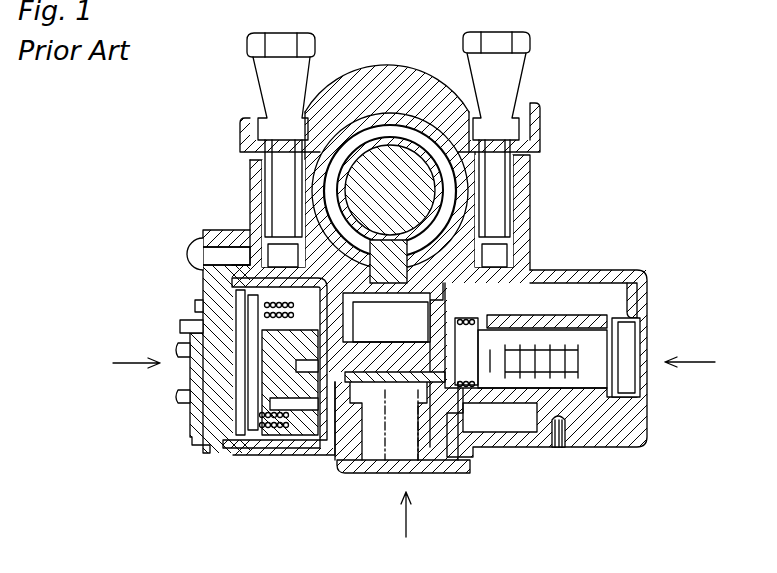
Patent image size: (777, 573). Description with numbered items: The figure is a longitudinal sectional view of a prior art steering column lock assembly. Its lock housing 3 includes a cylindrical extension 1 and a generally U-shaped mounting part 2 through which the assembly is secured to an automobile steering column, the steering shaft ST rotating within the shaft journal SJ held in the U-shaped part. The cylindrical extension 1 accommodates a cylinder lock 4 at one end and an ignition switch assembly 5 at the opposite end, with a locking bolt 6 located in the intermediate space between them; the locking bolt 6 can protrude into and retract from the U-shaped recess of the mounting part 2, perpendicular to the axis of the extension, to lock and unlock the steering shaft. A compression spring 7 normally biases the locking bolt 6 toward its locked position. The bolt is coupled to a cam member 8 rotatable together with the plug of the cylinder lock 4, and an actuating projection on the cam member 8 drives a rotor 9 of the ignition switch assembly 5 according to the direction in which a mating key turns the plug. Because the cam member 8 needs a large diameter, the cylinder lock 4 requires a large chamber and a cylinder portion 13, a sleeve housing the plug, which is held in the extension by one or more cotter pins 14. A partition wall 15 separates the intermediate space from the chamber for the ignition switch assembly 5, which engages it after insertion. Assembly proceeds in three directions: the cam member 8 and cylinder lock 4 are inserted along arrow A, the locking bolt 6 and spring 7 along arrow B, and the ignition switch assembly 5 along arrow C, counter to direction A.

The cylindrical extension 1 is at (504, 448).
The U-shaped mounting part 2 is at (302, 157).
The lock housing 3 is at (538, 238).
The cylinder lock 4 is at (573, 378).
The ignition switch assembly 5 is at (307, 425).
The locking bolt 6 is at (390, 242).
The compression spring 7 is at (382, 423).
The cam member 8 is at (400, 393).
The rotor 9 is at (280, 428).
The cylinder portion 13 is at (607, 413).
The cotter pin 14 is at (557, 440).
The partition wall 15 is at (337, 432).
The shaft journal SJ is at (364, 117).
The shaft ST is at (389, 162).
The arrow A is at (703, 359).
The arrow B is at (408, 532).
The arrow C is at (125, 366).